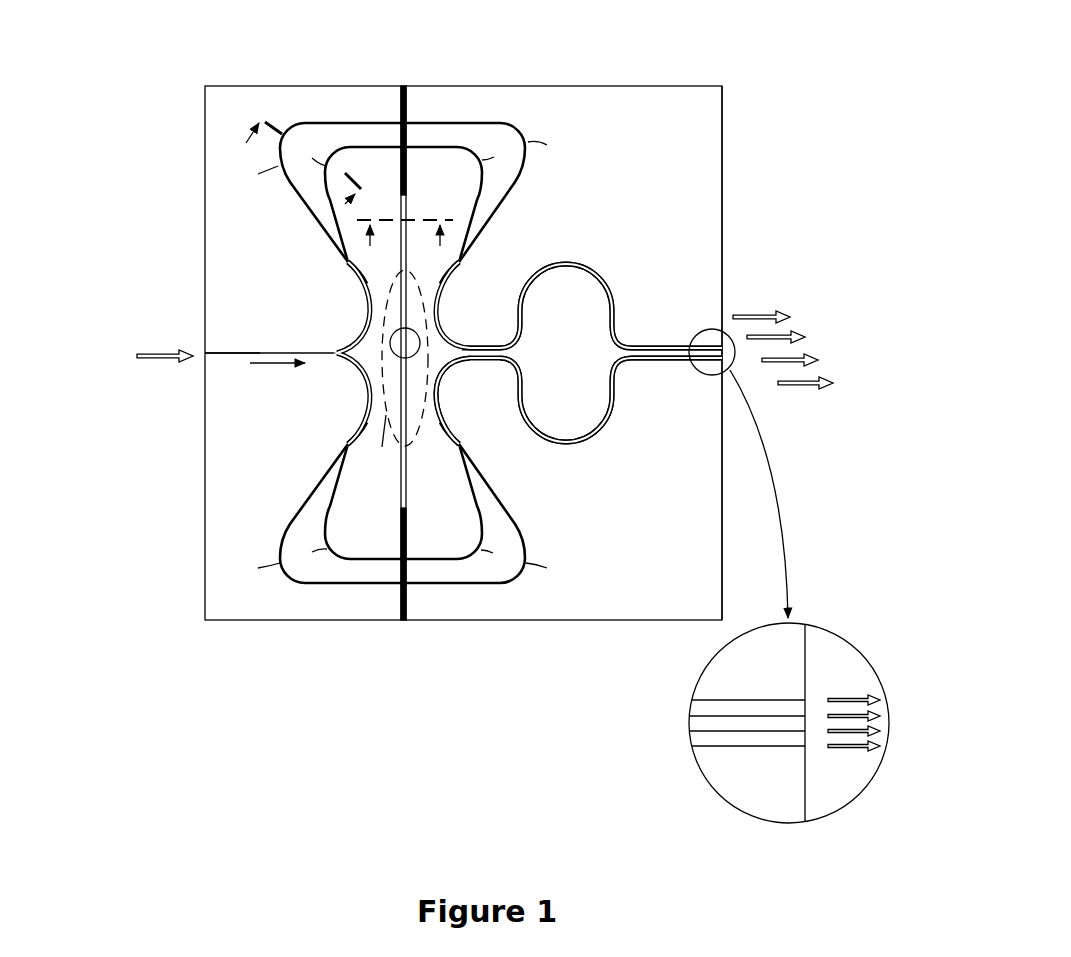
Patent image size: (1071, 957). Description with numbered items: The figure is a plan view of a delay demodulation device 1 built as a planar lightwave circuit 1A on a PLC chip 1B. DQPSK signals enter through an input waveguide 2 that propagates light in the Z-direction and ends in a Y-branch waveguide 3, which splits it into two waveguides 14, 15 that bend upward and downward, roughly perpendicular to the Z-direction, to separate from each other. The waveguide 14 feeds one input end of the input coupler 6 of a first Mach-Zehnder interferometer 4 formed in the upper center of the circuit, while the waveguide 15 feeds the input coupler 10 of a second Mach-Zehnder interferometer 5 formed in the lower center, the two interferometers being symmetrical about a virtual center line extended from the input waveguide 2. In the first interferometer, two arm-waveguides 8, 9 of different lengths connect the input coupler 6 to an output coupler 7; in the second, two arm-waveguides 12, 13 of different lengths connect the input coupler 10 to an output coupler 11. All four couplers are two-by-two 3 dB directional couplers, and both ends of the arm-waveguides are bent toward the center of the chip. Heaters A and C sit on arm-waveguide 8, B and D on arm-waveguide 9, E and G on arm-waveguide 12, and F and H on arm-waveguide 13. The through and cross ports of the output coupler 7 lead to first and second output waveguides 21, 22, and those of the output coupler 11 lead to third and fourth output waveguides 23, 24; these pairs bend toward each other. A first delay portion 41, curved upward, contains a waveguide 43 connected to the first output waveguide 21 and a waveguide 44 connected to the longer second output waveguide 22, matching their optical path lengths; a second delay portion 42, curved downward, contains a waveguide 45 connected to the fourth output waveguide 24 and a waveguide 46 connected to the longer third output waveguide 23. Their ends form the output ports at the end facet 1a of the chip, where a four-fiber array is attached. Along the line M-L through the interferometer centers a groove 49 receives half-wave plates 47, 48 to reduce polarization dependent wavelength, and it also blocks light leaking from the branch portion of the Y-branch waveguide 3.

The delay demodulation device 1 is at (645, 60).
The planar lightwave circuit 1A is at (334, 112).
The PLC chip 1B is at (723, 102).
The end facet 1a is at (723, 188).
The input waveguide 2 is at (227, 356).
The Y-branch waveguide 3 is at (333, 352).
The first Mach-Zehnder interferometer 4 is at (468, 117).
The second Mach-Zehnder interferometer 5 is at (468, 590).
The input coupler 6 is at (344, 259).
The output coupler 7 is at (462, 260).
The arm-waveguide 8 is at (350, 122).
The arm-waveguide 9 is at (382, 148).
The input coupler 10 is at (348, 439).
The output coupler 11 is at (464, 438).
The arm-waveguide 12 is at (353, 585).
The arm-waveguide 13 is at (378, 557).
The waveguide 14 is at (356, 340).
The waveguide 15 is at (347, 362).
The first output waveguide 21 is at (468, 340).
The second output waveguide 22 is at (448, 338).
The third output waveguide 23 is at (456, 362).
The fourth output waveguide 24 is at (436, 400).
The first delay portion 41 is at (620, 461).
The second delay portion 42 is at (620, 580).
The waveguide 43 is at (557, 263).
The waveguide 44 is at (569, 272).
The waveguide 45 is at (557, 443).
The waveguide 46 is at (573, 434).
The half-wave plate 47 is at (408, 100).
The half-wave plate 48 is at (410, 606).
The groove 49 is at (409, 476).